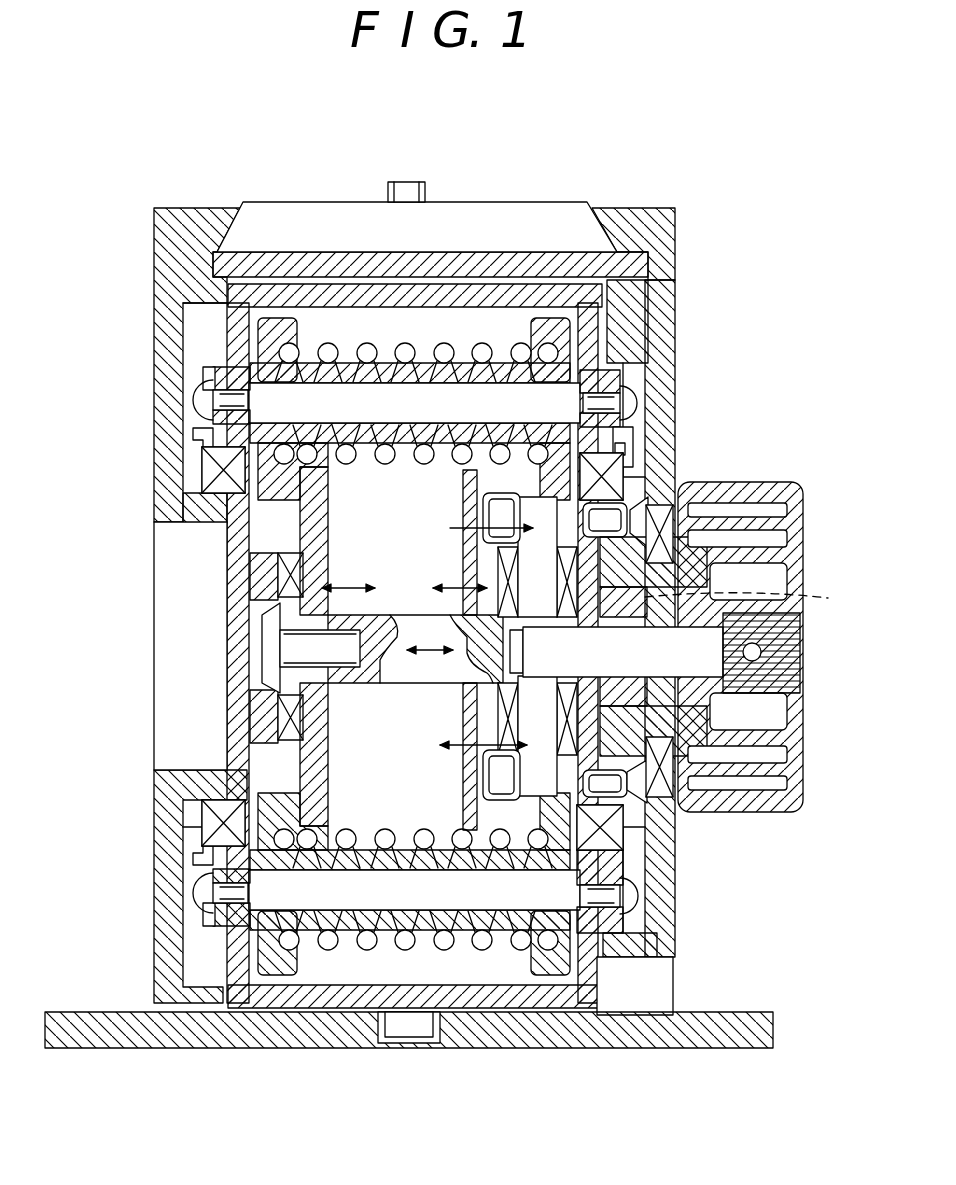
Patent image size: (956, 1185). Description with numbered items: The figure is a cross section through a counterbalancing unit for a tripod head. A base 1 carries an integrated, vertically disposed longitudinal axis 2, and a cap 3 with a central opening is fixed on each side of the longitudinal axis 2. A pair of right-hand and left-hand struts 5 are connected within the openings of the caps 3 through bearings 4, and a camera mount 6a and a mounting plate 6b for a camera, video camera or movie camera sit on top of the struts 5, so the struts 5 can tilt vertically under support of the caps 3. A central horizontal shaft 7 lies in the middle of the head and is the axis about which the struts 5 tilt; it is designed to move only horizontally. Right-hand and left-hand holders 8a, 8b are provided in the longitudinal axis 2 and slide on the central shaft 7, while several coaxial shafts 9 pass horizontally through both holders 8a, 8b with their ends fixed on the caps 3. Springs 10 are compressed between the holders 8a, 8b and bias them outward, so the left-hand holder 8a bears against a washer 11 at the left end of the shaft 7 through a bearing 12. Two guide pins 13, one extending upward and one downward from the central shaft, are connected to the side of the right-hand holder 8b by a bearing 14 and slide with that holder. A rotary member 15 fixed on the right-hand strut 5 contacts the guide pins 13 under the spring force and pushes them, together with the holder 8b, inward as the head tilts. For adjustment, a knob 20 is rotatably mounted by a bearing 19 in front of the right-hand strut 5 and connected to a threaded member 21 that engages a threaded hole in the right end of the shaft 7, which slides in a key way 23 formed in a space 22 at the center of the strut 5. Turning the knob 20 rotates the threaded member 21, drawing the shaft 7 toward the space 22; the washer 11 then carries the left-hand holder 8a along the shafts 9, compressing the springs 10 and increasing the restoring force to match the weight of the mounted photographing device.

The base 1 is at (549, 1040).
The longitudinal axis 2 is at (462, 298).
The cap 3 is at (237, 333).
The bearing 4 is at (212, 477).
The strut 5 is at (170, 365).
The camera mount 6a is at (416, 262).
The mounting plate 6b is at (553, 232).
The central horizontal shaft 7 is at (403, 670).
The left-hand holder 8a is at (267, 447).
The right-hand holder 8b is at (558, 448).
The shaft 9 is at (302, 397).
The spring 10 is at (367, 350).
The washer 11 is at (267, 702).
The bearing 12 is at (283, 577).
The guide pin 13 is at (530, 510).
The bearing 14 is at (487, 571).
The rotary member 15 is at (645, 492).
The bearing 19 is at (715, 509).
The knob 20 is at (795, 552).
The threaded member 21 is at (700, 652).
The space 22 is at (690, 690).
The key way 23 is at (754, 597).